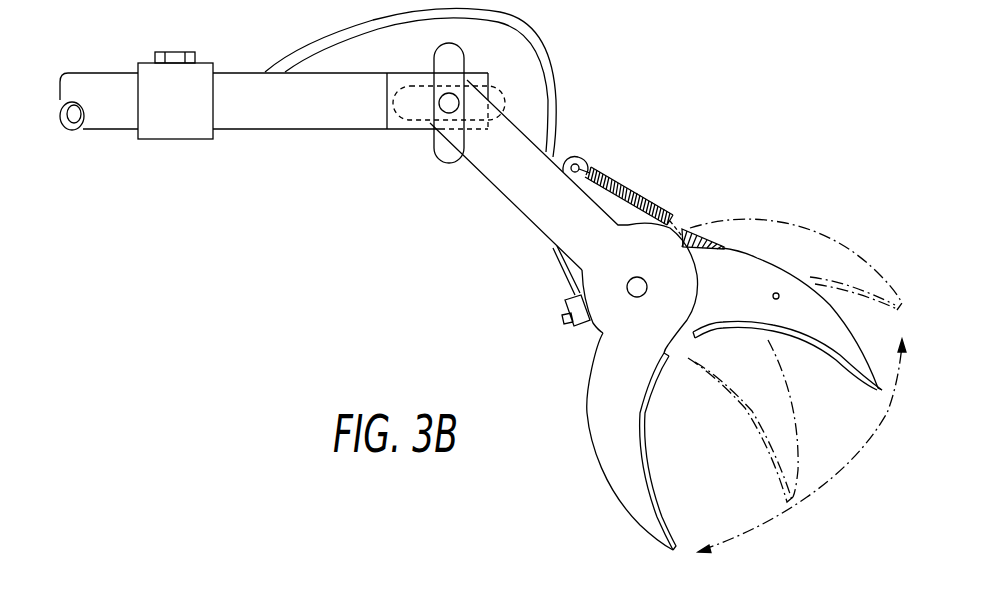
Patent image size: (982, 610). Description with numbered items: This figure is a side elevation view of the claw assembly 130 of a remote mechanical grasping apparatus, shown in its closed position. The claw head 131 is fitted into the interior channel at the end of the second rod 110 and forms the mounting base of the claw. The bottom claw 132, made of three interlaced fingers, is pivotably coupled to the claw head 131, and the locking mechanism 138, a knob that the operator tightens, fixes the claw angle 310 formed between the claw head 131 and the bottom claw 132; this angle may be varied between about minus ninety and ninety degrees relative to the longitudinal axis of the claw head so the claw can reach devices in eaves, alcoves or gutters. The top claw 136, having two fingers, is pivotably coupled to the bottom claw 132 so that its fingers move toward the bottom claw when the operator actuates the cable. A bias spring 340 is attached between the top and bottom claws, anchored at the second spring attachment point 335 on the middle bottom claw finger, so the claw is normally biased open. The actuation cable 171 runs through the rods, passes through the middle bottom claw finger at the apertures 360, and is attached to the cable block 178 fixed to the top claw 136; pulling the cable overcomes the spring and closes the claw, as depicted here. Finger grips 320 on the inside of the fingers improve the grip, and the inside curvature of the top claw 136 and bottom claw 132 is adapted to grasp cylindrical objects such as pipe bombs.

The second rod 110 is at (283, 120).
The claw assembly 130 is at (423, 262).
The claw head 131 is at (410, 130).
The bottom claw 132 is at (605, 463).
The top claw 136 is at (757, 258).
The locking mechanism 138 is at (443, 52).
The actuation cable 171 is at (527, 45).
The cable block 178 is at (580, 330).
The claw angle 310 is at (842, 487).
The finger grips 320 is at (645, 437).
The second spring attachment point 335 is at (575, 157).
The bias spring 340 is at (610, 182).
The apertures 360 is at (555, 250).